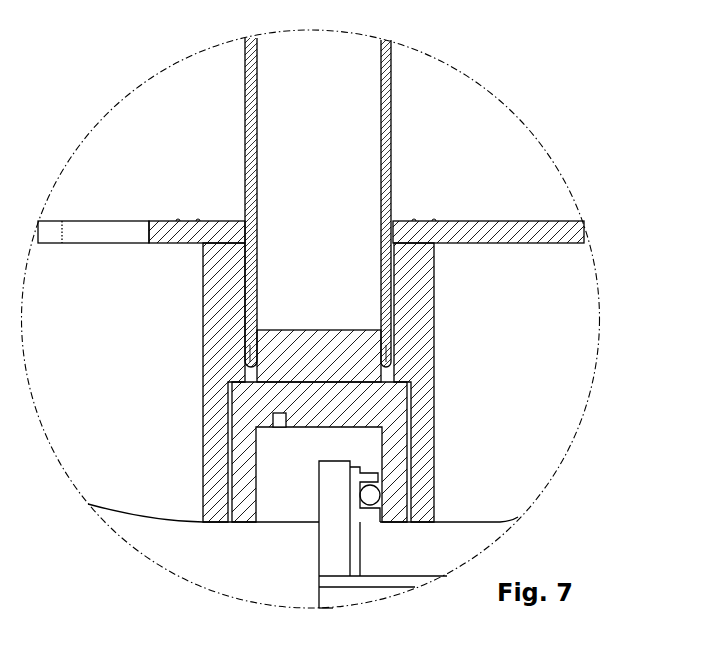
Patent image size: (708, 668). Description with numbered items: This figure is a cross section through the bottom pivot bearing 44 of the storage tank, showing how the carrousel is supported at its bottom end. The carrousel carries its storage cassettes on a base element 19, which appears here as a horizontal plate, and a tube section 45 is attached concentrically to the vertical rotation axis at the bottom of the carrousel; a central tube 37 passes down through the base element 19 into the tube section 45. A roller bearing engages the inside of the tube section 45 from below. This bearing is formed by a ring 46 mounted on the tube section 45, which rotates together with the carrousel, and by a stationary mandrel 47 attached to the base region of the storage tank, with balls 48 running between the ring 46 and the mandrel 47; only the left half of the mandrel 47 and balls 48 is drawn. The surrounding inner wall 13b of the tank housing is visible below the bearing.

The inner wall 13b is at (153, 516).
The base element 19 is at (491, 243).
The tube 37 is at (384, 118).
The bottom pivot bearing 44 is at (512, 337).
The tube section 45 is at (210, 310).
The ring 46 is at (245, 451).
The mandrel 47 is at (361, 472).
The balls 48 is at (371, 494).